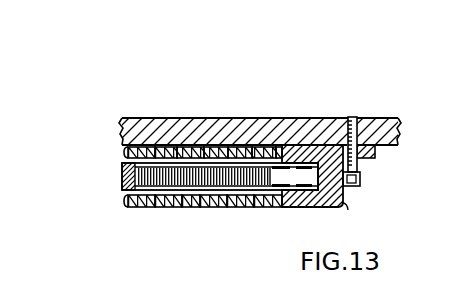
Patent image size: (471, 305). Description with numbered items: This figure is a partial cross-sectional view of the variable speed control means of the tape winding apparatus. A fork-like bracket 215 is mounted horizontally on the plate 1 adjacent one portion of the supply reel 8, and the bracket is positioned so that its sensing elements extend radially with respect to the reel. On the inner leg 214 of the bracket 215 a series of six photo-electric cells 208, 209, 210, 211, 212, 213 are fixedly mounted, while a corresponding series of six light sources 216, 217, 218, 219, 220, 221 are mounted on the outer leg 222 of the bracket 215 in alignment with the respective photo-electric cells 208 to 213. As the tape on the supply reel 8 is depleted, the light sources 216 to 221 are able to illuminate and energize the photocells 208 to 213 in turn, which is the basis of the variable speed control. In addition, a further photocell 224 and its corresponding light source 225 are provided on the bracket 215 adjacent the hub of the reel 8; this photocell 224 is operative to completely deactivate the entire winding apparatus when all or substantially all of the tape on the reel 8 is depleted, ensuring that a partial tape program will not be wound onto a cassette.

The plate 1 is at (386, 149).
The supply reel 8 is at (122, 178).
The photo-electric cell 208 is at (288, 118).
The photo-electric cell 209 is at (265, 118).
The photo-electric cell 210 is at (236, 118).
The photo-electric cell 211 is at (219, 118).
The photo-electric cell 212 is at (190, 118).
The photo-electric cell 213 is at (164, 118).
The inner leg 214 is at (126, 152).
The fork-like bracket 215 is at (346, 205).
The light source 216 is at (292, 208).
The light source 217 is at (281, 208).
The light source 218 is at (243, 208).
The light source 219 is at (231, 208).
The light source 220 is at (187, 208).
The light source 221 is at (181, 207).
The outer leg 222 is at (126, 201).
The photocell 224 is at (142, 118).
The light source 225 is at (138, 209).